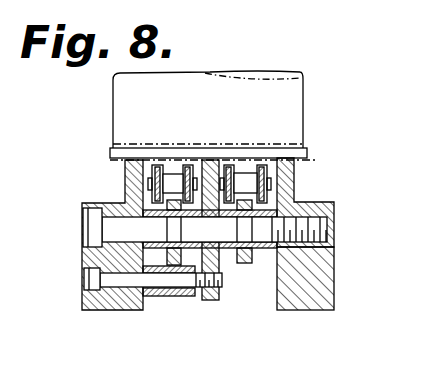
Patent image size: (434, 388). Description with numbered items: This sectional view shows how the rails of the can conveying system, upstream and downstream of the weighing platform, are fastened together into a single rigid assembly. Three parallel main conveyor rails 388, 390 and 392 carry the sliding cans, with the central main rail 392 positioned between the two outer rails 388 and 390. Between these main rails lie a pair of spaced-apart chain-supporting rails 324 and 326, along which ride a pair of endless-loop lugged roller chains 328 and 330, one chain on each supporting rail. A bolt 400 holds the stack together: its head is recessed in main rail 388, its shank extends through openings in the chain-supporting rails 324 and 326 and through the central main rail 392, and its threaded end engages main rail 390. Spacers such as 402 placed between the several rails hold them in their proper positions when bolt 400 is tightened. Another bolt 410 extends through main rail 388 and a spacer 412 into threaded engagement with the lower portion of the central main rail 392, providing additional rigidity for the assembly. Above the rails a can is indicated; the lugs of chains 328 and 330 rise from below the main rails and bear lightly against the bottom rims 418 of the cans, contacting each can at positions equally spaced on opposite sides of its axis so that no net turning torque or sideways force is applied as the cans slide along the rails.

The bottom rim 418 is at (110, 149).
The main conveyor rail 388 is at (125, 170).
The main conveyor rail 390 is at (289, 177).
The central main rail 392 is at (208, 170).
The lugged roller chain 328 is at (173, 170).
The lugged roller chain 330 is at (247, 170).
The bolt 400 is at (92, 228).
The spacer 402 is at (148, 212).
The chain-supporting rail 324 is at (170, 255).
The chain-supporting rail 326 is at (252, 262).
The bolt 410 is at (88, 280).
The spacer 412 is at (165, 298).